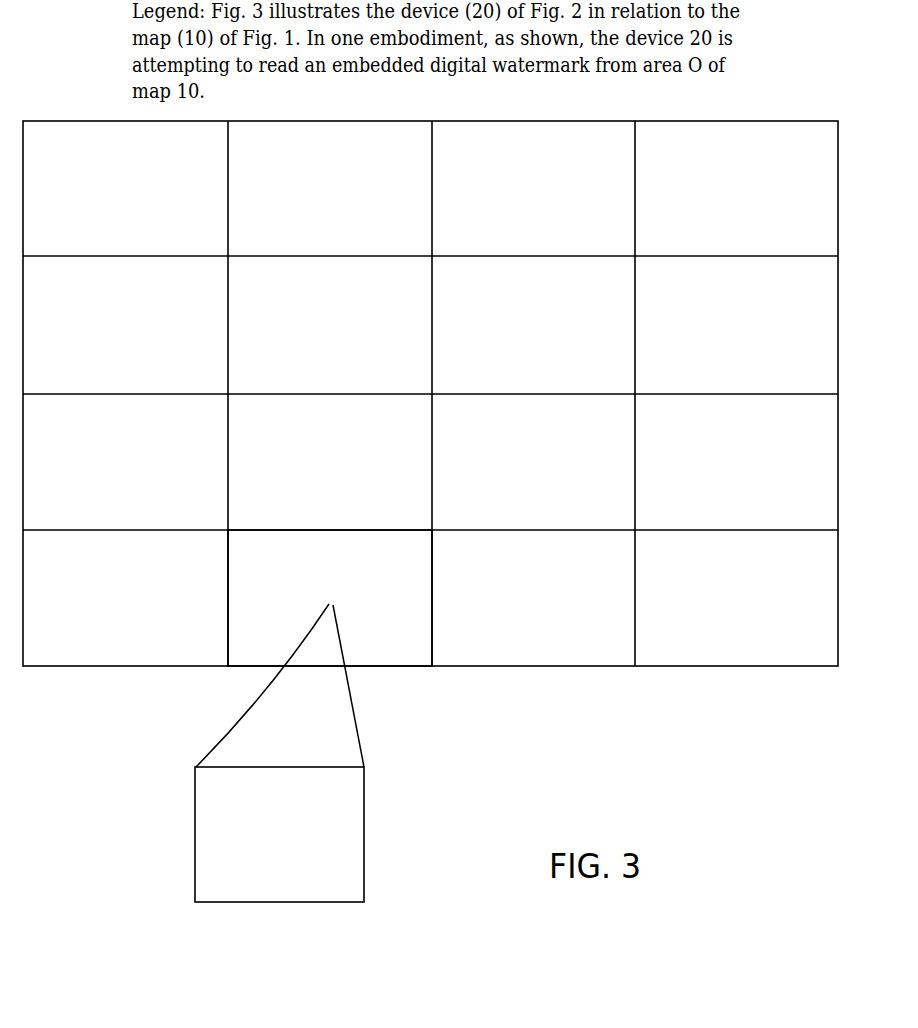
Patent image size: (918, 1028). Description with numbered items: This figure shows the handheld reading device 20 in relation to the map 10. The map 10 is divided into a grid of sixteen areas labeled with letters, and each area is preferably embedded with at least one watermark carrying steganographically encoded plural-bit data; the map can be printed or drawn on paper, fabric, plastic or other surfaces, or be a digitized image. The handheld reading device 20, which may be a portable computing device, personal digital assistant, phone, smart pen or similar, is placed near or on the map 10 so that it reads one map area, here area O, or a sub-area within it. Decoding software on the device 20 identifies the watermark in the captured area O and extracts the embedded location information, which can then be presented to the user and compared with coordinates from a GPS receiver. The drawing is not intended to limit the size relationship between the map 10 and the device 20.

The map 10 is at (430, 439).
The handheld reading device 20 is at (281, 902).
The area O is at (330, 598).